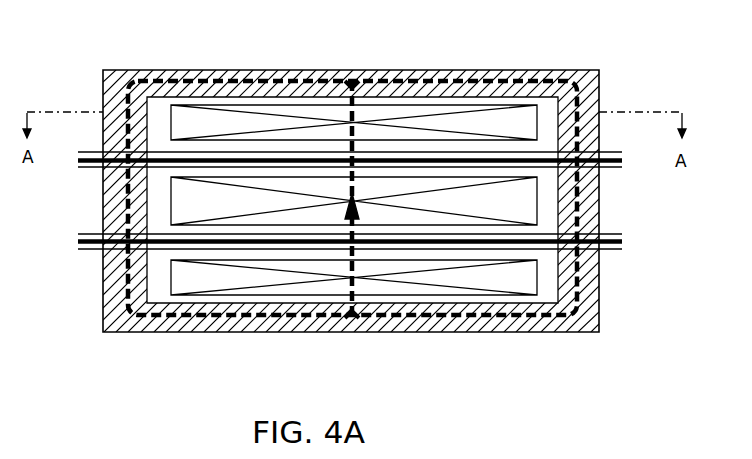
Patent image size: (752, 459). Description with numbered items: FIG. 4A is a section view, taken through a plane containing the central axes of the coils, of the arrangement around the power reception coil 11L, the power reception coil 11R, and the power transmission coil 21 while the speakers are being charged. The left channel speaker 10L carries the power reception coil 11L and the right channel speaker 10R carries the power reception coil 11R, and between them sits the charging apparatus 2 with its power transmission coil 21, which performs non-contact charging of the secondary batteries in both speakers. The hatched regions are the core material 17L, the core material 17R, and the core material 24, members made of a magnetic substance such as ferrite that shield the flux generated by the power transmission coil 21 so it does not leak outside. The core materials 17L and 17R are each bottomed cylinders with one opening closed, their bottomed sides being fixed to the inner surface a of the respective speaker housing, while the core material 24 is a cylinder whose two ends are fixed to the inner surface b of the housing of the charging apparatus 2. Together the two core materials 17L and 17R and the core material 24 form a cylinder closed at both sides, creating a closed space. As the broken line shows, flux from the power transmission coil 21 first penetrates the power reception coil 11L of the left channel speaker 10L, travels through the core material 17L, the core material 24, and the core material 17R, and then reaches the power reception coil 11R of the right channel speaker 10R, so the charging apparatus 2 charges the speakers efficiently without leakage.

The left channel speaker 10L is at (623, 73).
The right channel speaker 10R is at (623, 292).
The power reception coil 11L is at (395, 105).
The power reception coil 11R is at (388, 296).
The core material 17L is at (505, 70).
The core material 17R is at (505, 332).
The charging apparatus 2 is at (623, 209).
The power transmission coil 21 is at (171, 200).
The core material 24 is at (104, 187).
The inner surface a is at (612, 152).
The inner surface b is at (612, 167).